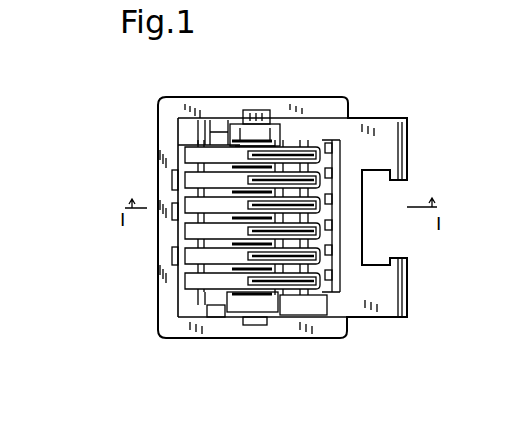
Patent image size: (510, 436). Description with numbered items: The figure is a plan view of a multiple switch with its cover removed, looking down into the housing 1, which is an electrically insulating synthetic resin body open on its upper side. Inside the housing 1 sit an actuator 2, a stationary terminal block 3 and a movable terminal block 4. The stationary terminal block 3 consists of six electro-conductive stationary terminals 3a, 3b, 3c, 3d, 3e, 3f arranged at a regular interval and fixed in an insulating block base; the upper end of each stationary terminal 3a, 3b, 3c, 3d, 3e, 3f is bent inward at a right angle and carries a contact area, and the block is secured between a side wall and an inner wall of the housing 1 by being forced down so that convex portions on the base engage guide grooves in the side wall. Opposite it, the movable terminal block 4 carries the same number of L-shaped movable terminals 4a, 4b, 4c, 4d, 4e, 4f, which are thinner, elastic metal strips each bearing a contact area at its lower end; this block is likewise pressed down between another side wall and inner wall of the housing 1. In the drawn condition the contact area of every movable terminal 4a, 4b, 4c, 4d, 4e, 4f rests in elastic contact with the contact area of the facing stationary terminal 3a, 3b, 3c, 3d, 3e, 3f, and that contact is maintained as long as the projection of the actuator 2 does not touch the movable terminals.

The housing 1 is at (162, 341).
The actuator 2 is at (253, 112).
The stationary terminal block 3 is at (484, 95).
The stationary terminal 3a is at (322, 280).
The stationary terminal 3b is at (322, 255).
The stationary terminal 3c is at (322, 230).
The stationary terminal 3d is at (322, 180).
The stationary terminal 3e is at (322, 206).
The stationary terminal 3f is at (322, 153).
The movable terminal block 4 is at (90, 95).
The movable terminal 4a is at (187, 281).
The movable terminal 4b is at (187, 256).
The movable terminal 4c is at (187, 231).
The movable terminal 4d is at (187, 178).
The movable terminal 4e is at (187, 205).
The movable terminal 4f is at (187, 152).